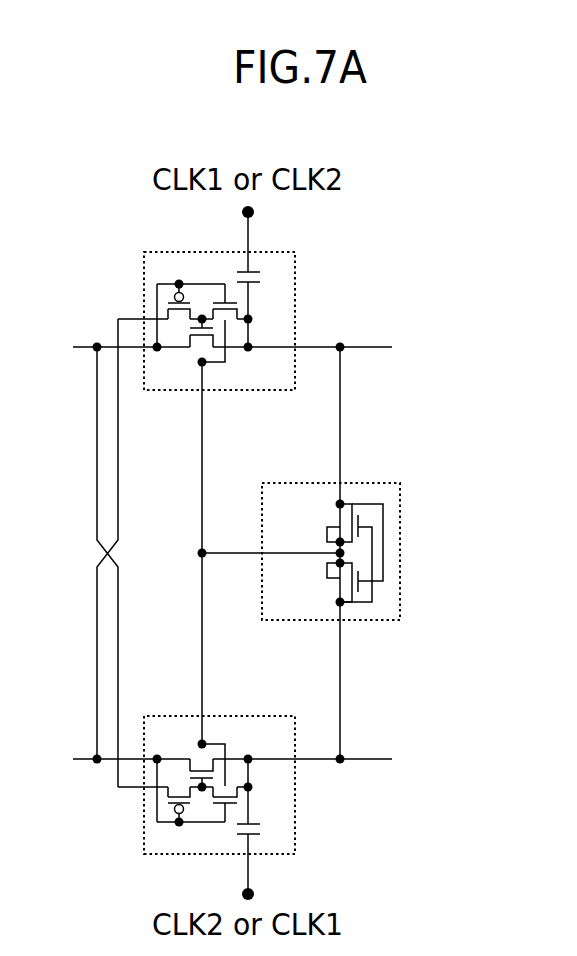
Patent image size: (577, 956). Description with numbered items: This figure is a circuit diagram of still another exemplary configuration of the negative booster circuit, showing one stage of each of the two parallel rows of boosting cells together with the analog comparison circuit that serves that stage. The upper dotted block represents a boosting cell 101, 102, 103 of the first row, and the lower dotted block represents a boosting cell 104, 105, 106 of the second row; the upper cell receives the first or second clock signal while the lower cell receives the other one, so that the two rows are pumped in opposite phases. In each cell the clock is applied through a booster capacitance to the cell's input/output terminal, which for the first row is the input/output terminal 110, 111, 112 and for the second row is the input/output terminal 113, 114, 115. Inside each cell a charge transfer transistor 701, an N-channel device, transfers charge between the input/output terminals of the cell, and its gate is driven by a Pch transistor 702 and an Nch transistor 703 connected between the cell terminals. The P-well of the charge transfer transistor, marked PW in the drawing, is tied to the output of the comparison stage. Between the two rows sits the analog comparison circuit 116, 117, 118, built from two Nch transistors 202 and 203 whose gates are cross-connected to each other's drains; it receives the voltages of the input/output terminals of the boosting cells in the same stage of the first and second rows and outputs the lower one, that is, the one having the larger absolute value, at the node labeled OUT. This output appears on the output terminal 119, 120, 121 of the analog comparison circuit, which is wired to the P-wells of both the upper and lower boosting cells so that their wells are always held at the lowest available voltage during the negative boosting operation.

The boosting cell 101 is at (304, 298).
The boosting cell 102 is at (304, 298).
The boosting cell 103 is at (296, 273).
The boosting cell 104 is at (305, 808).
The boosting cell 105 is at (305, 808).
The boosting cell 106 is at (296, 823).
The input/output terminal 110 is at (290, 374).
The input/output terminal 111 is at (290, 374).
The input/output terminal 112 is at (370, 348).
The input/output terminal 113 is at (290, 730).
The input/output terminal 114 is at (290, 730).
The input/output terminal 115 is at (368, 757).
The analog comparison circuit 116 is at (385, 521).
The analog comparison circuit 117 is at (385, 521).
The analog comparison circuit 118 is at (385, 521).
The output terminal of analog comparison circuit 119 is at (218, 553).
The output terminal of analog comparison circuit 120 is at (218, 553).
The output terminal of analog comparison circuit 121 is at (203, 553).
The Nch transistor 202 is at (358, 518).
The Nch transistor 203 is at (358, 588).
The charge transfer transistor 701 is at (204, 343).
The Pch transistor 702 is at (168, 301).
The Nch transistor 703 is at (215, 301).